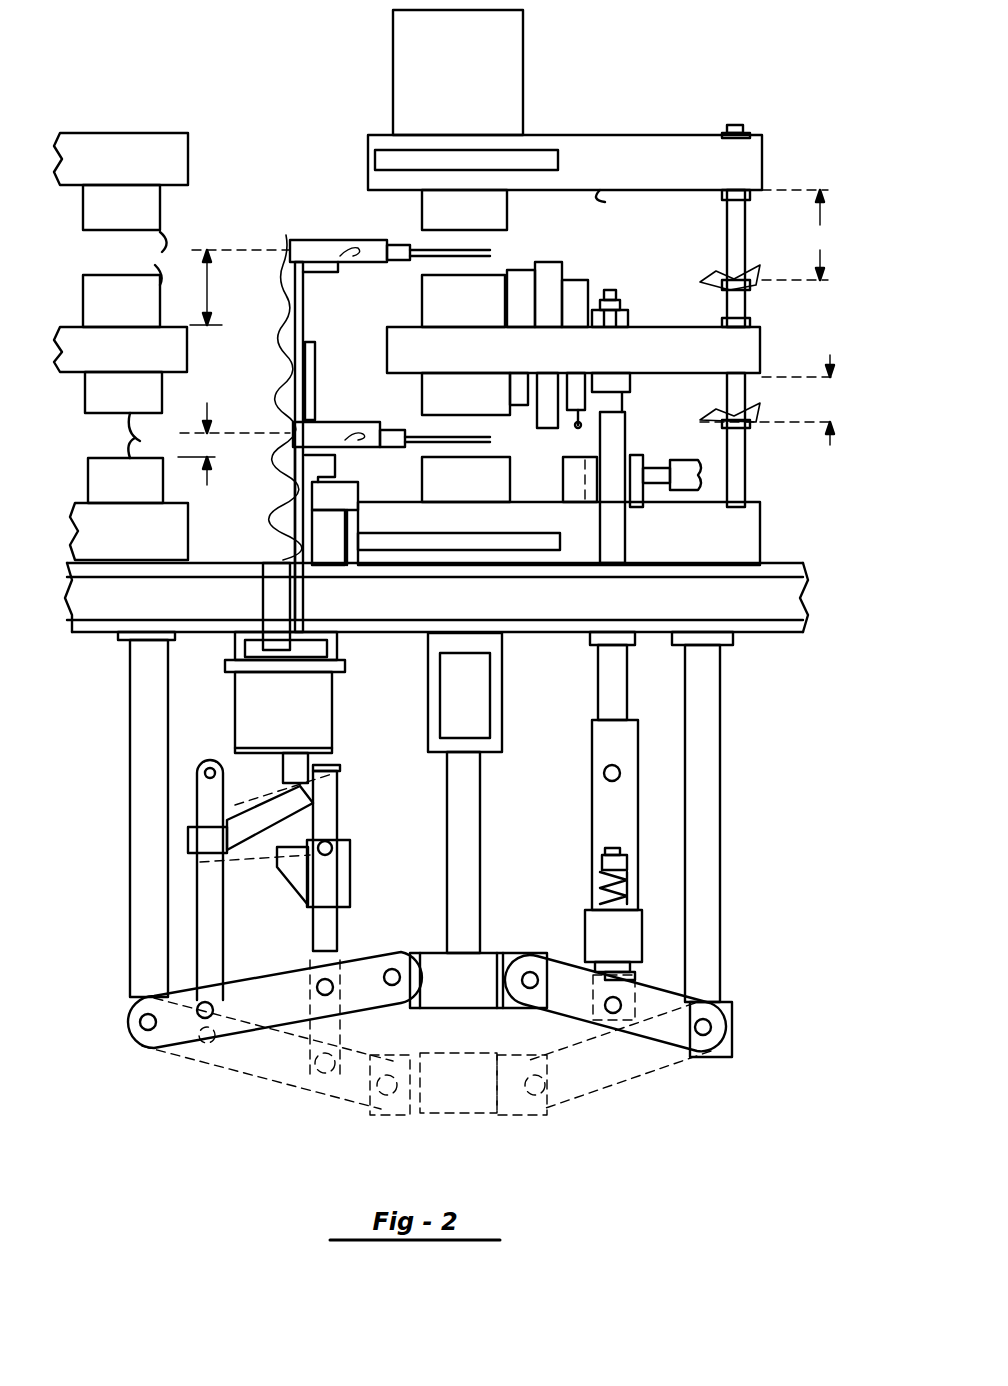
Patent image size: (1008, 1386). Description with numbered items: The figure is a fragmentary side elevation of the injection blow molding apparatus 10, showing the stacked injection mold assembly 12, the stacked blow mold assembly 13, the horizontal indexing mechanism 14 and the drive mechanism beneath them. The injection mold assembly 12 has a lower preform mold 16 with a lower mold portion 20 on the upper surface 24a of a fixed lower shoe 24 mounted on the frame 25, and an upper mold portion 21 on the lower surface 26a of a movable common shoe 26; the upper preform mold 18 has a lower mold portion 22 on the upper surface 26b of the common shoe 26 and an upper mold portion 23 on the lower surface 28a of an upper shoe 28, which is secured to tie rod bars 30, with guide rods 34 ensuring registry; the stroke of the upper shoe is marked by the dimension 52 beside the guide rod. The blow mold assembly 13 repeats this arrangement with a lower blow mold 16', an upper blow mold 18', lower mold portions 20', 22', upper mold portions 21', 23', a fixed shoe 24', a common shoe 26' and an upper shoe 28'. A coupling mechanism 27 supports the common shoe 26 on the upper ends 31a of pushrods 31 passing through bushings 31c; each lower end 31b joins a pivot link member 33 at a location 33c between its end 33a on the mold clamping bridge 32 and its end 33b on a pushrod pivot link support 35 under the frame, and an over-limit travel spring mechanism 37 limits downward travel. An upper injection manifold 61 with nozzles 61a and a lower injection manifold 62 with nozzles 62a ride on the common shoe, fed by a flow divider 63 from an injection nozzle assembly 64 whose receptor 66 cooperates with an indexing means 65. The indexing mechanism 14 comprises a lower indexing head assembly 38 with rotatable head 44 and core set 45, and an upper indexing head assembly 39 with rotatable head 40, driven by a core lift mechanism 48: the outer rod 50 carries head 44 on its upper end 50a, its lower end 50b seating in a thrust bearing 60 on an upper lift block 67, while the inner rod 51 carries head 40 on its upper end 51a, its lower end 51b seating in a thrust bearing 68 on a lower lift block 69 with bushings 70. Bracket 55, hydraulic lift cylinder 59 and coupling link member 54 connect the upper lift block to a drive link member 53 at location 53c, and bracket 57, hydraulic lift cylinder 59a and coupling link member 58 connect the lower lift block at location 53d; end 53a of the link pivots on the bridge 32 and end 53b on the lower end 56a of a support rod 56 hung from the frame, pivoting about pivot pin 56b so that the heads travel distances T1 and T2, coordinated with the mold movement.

The injection blow molding apparatus 10 is at (662, 1172).
The stacked injection mold assembly 12 is at (612, 237).
The stacked blow mold assembly 13 is at (63, 264).
The horizontal indexing mechanism 14 is at (303, 240).
The lower preform mold 16 is at (512, 429).
The lower blow mold 16' is at (110, 435).
The upper preform mold 18 is at (521, 237).
The upper blow mold 18' is at (141, 258).
The lower mold portion 20 is at (438, 480).
The lower mold portion 20' is at (168, 482).
The upper mold portion 21 is at (392, 394).
The upper mold portion 21' is at (172, 392).
The lower mold portion 22 is at (435, 297).
The lower mold portion 22' is at (116, 277).
The upper mold portion 23 is at (379, 219).
The upper mold portion 23' is at (164, 198).
The fixed lower shoe 24 is at (606, 525).
The fixed shoe 24' is at (169, 531).
The upper surface 24a is at (520, 505).
The frame 25 is at (780, 563).
The common shoe 26 is at (593, 397).
The common shoe 26' is at (155, 349).
The lower surface 26a is at (380, 370).
The upper surface 26b is at (385, 322).
The coupling mechanism 27 is at (578, 950).
The upper shoe 28 is at (608, 164).
The upper shoe 28' is at (159, 150).
The lower surface 28a is at (605, 202).
The tie rod bars 30 is at (470, 770).
The push rod 31 is at (598, 700).
The upper end 31a is at (612, 303).
The lower end 31b is at (640, 968).
The bushings 31c is at (622, 563).
The bridge 32 is at (487, 965).
The pivot link member 33 is at (665, 1030).
The end 33a is at (545, 1000).
The end 33b is at (735, 1052).
The location 33c is at (595, 1020).
The guide rods 34 is at (745, 312).
The pushrod pivot link support 35 is at (710, 895).
The over-limit travel spring mechanism 37 is at (600, 880).
The lower indexing head assembly 38 is at (340, 425).
The upper indexing head assembly 39 is at (355, 235).
The rotatable head 40 is at (460, 228).
The rotatable head 44 is at (466, 394).
The core set 45 is at (417, 441).
The core lift mechanism 48 is at (300, 930).
The outer rod 50 is at (330, 720).
The upper end 50a is at (320, 632).
The lower end 50b is at (305, 762).
The inner rod 51 is at (838, 400).
The upper end 51a is at (290, 383).
The lower end 51b is at (340, 820).
The stroke distance 52 is at (800, 235).
The drive link member 53 is at (280, 985).
The end 53a is at (390, 950).
The end 53b is at (130, 1032).
The location 53c is at (205, 1018).
The location 53d is at (332, 992).
The coupling link member 54 is at (200, 890).
The bracket 55 is at (215, 832).
The support rod 56 is at (135, 735).
The lower end 56a is at (335, 777).
The pivot pin 56b is at (150, 1032).
The bracket 57 is at (352, 870).
The coupling link member 58 is at (345, 910).
The hydraulic lift cylinder 59 is at (203, 785).
The hydraulic lift cylinder 59a is at (340, 845).
The thrust bearing 60 is at (270, 780).
The upper injection manifold 61 is at (552, 275).
The nozzles 61a is at (520, 270).
The lower injection manifold 62 is at (560, 395).
The nozzles 62a is at (520, 365).
The flow divider 63 is at (578, 296).
The injection nozzle assembly 64 is at (640, 452).
The indexing means 65 is at (580, 428).
The receptor 66 is at (560, 478).
The upper lift block 67 is at (225, 845).
The thrust bearing 68 is at (355, 830).
The lower lift block 69 is at (285, 872).
The bushing 70 is at (235, 805).
The length of travel T1 is at (234, 444).
The length of travel T2 is at (240, 287).